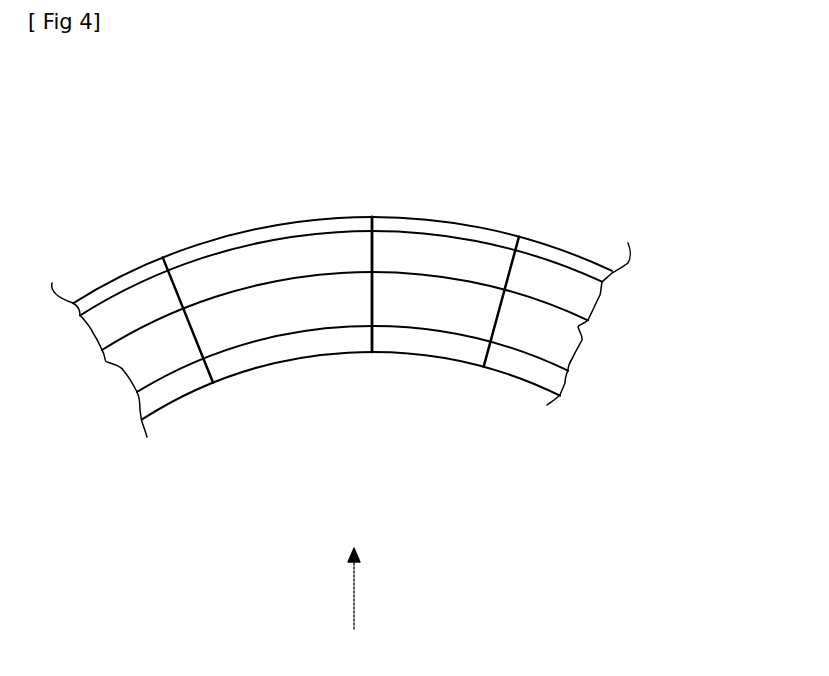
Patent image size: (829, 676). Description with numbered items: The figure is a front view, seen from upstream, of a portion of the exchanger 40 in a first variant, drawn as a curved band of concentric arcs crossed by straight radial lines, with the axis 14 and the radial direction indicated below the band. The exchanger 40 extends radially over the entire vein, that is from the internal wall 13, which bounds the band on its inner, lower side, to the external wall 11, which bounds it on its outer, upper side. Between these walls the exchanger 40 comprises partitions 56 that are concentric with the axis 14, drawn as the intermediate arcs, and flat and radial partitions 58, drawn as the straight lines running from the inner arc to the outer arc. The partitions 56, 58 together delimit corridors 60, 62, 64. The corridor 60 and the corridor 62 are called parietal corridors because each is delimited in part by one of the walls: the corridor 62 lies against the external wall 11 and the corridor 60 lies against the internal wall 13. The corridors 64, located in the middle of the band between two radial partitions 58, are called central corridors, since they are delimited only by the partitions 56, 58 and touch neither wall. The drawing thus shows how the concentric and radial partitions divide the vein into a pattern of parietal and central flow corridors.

The exchanger 40 is at (519, 182).
The external wall 11 is at (174, 250).
The internal wall 13 is at (190, 395).
The axis 14 is at (347, 617).
The partitions 56 is at (222, 297).
The flat and radial partitions 58 is at (291, 316).
The corridor 60 is at (332, 340).
The corridor 62 is at (405, 227).
The corridors 64 is at (345, 315).